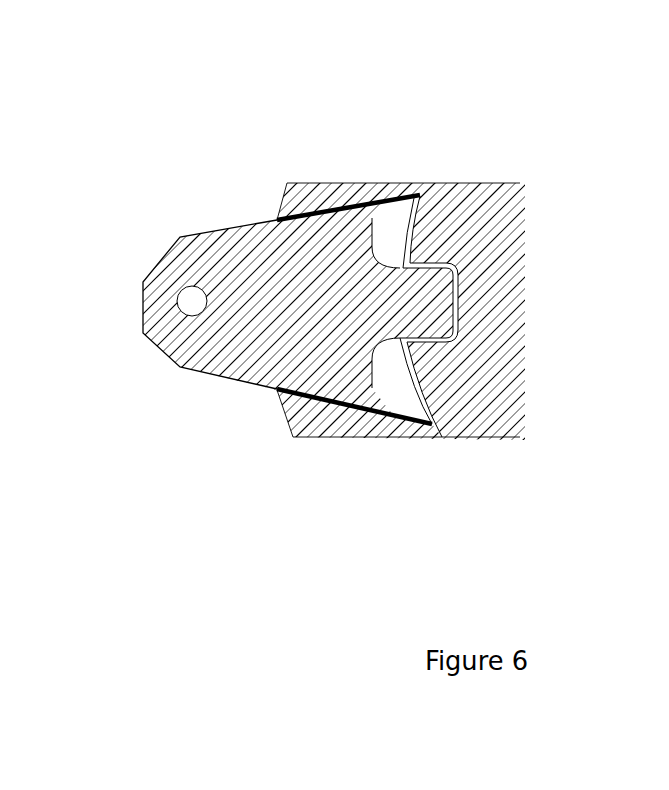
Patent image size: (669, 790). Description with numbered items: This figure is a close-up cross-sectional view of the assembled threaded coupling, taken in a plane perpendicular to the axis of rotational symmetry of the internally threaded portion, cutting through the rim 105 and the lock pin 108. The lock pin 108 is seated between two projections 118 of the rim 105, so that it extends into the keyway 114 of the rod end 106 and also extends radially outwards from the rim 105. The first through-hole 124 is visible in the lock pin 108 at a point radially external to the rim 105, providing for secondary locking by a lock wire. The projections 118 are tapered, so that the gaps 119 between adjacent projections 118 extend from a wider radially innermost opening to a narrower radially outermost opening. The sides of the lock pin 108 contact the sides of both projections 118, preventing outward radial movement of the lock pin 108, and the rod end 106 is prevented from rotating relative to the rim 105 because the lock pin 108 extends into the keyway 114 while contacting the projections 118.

The annular rim 105 is at (263, 178).
The rod end 106 is at (483, 385).
The lock pin 108 is at (235, 369).
The keyway 114 is at (449, 270).
The projections 118 is at (332, 194).
The gaps 119 is at (400, 214).
The first through-hole 124 is at (191, 298).